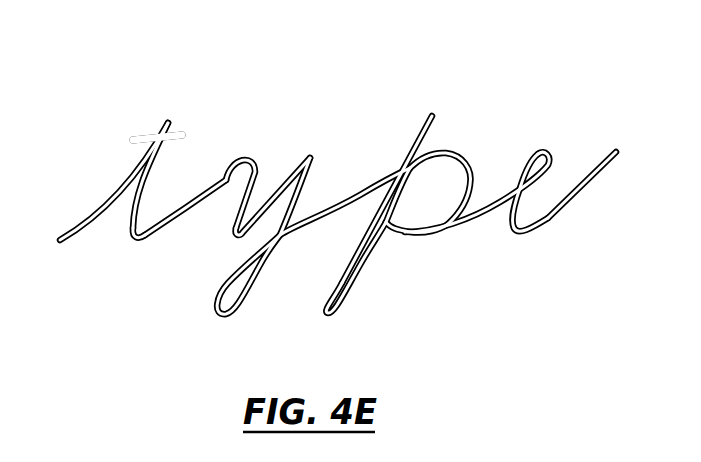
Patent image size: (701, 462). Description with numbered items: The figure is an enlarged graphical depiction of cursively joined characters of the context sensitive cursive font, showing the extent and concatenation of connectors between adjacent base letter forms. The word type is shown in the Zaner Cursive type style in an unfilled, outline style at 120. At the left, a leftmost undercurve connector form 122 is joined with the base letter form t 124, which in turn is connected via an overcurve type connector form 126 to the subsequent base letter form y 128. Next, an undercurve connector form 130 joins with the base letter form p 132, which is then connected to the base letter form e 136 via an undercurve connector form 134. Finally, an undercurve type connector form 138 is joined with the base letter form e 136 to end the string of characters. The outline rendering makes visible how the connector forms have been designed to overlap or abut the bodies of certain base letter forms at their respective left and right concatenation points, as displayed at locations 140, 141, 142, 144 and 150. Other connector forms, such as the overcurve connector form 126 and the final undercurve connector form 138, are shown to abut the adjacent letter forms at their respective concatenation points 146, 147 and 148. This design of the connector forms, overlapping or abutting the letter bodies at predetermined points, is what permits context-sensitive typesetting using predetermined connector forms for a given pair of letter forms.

The word type in outline style 120 is at (336, 165).
The leftmost undercurve connector form 122 is at (93, 217).
The base letter form t 124 is at (160, 127).
The concatenation point 140 is at (144, 161).
The concatenation point 146 is at (138, 243).
The overcurve type connector form 126 is at (178, 218).
The concatenation point 147 is at (245, 156).
The base letter form y 128 is at (309, 163).
The concatenation point 141 is at (284, 241).
The undercurve connector form 130 is at (367, 188).
The concatenation point 142 is at (408, 157).
The base letter form p 132 is at (463, 153).
The undercurve connector form 134 is at (465, 230).
The concatenation point 144 is at (418, 237).
The concatenation point 150 is at (509, 185).
The base letter form e 136 is at (543, 148).
The concatenation point 148 is at (518, 232).
The undercurve type connector form 138 is at (572, 208).